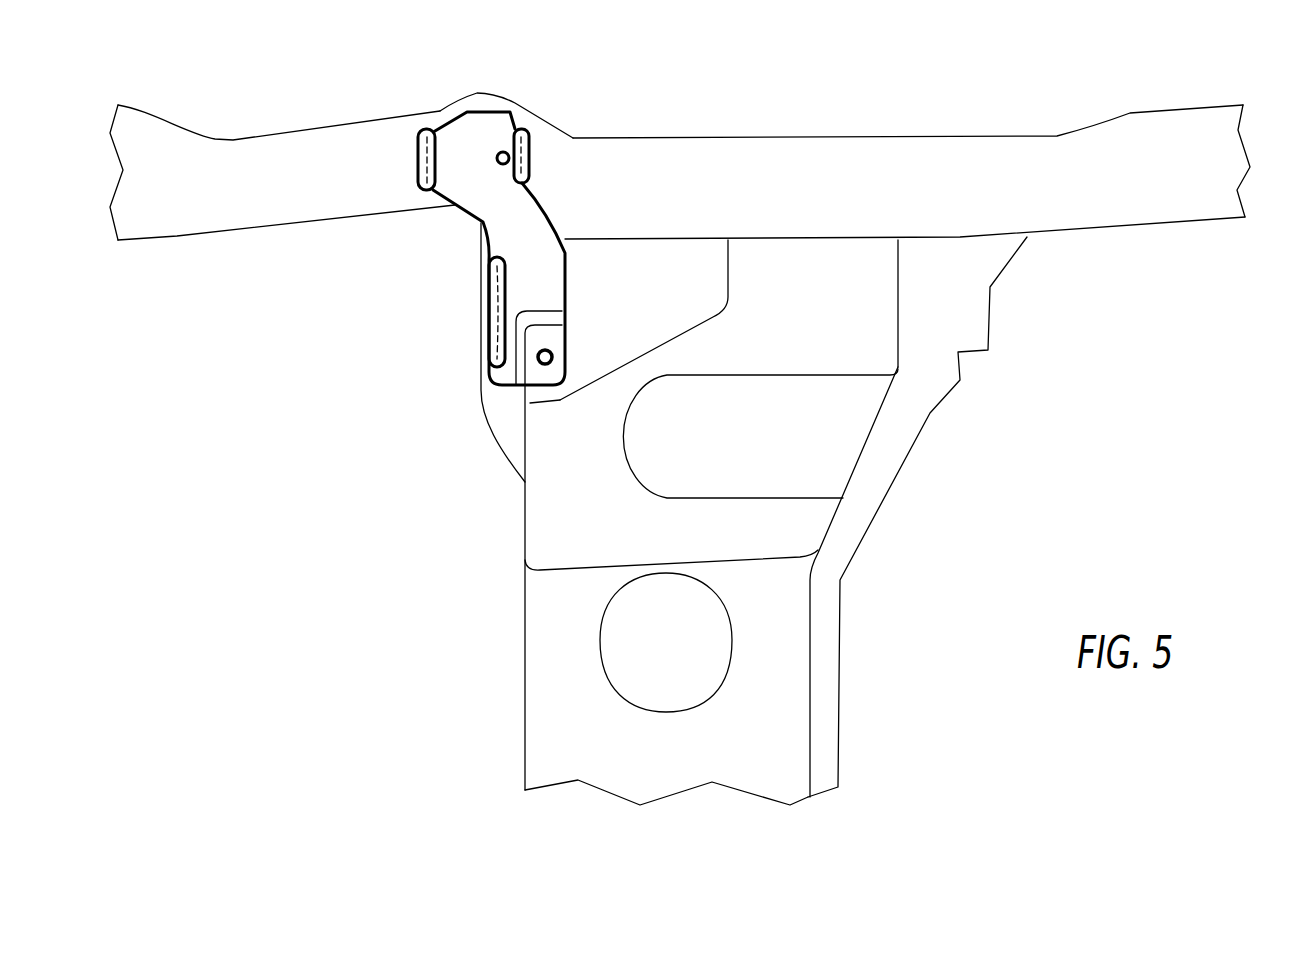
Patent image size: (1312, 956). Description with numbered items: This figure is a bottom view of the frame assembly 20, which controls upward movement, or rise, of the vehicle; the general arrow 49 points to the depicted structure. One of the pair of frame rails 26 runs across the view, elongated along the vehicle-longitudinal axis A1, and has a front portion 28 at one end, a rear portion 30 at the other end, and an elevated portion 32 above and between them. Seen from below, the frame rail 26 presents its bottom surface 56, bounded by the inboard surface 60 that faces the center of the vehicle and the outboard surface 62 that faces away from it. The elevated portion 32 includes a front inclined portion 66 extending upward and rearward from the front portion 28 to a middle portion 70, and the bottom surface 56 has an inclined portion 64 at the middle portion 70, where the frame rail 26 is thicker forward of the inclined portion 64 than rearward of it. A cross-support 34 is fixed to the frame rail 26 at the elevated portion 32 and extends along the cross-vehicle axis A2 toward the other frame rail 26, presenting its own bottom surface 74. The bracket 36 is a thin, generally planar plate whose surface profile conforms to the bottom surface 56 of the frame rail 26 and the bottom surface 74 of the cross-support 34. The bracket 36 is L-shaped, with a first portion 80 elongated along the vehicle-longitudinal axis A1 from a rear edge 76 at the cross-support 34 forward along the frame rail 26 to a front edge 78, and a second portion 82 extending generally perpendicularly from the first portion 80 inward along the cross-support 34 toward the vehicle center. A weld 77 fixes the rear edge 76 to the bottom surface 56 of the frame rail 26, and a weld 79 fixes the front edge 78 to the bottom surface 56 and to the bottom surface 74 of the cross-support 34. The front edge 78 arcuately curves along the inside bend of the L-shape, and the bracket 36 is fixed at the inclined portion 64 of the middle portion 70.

The assembly 20 is at (498, 87).
The frame rail 26 is at (1123, 205).
The front portion 28 is at (145, 213).
The rear portion 30 is at (1232, 112).
The elevated portion 32 is at (833, 150).
The cross-support 34 is at (538, 425).
The bracket 36 is at (515, 277).
The vehicle body structure 49 is at (345, 57).
The bottom surface 56 is at (765, 150).
The inboard surface 60 is at (1190, 227).
The outboard surface 62 is at (1063, 133).
The inclined portion 64 is at (442, 200).
The front inclined portion 66 is at (282, 153).
The middle portion 70 is at (720, 150).
The bottom surface 74 is at (673, 287).
The rear edge 76 is at (528, 163).
The weld 77 is at (528, 147).
The front edge 78 is at (415, 172).
The weld 79 is at (413, 145).
The first portion 80 is at (445, 147).
The second portion 82 is at (547, 293).
The vehicle-longitudinal axis A1 is at (775, 853).
The cross-vehicle axis A2 is at (217, 378).